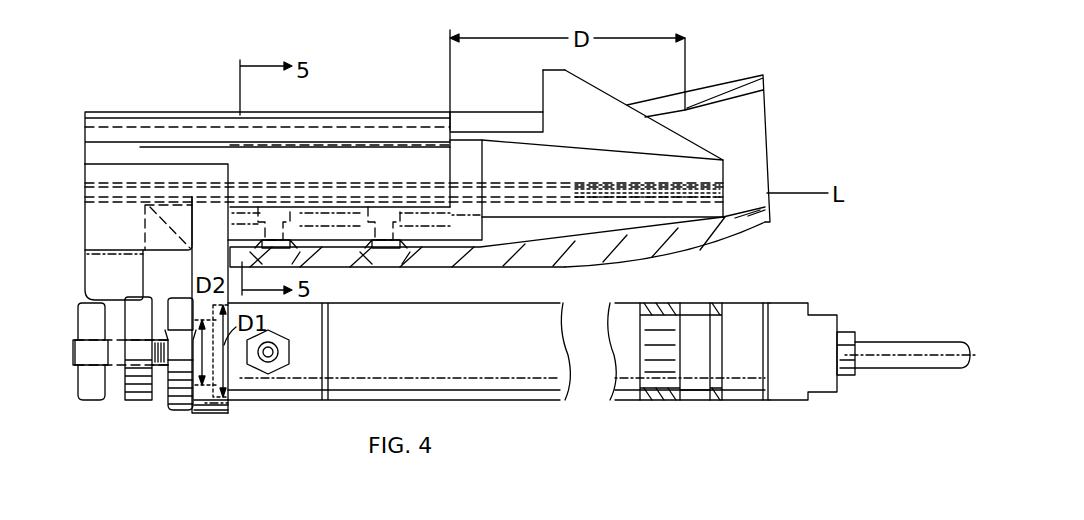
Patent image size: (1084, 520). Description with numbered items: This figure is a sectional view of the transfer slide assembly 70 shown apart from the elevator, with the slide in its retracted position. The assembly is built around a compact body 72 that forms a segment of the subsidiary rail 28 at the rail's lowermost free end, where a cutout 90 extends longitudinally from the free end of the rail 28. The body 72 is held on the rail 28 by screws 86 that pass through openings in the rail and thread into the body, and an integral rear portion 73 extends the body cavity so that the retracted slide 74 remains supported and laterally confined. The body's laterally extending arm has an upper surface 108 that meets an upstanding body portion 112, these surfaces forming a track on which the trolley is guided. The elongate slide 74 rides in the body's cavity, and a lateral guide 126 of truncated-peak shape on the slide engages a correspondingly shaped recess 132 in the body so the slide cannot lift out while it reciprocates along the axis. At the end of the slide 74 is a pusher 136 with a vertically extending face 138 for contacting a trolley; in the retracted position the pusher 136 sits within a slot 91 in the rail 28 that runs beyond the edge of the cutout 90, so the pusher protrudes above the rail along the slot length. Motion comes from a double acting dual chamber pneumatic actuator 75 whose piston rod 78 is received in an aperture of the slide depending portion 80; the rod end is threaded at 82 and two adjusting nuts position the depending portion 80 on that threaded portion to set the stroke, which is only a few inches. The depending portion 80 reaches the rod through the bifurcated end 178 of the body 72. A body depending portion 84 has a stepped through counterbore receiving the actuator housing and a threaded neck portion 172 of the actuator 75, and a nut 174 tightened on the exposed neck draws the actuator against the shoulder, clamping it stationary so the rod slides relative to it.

The subsidiary rail 28 is at (740, 82).
The transfer slide assembly 70 is at (545, 403).
The body 72 is at (480, 228).
The rear portion 73 is at (578, 216).
The slide 74 is at (705, 165).
The double acting dual chamber pneumatic actuator 75 is at (745, 318).
The piston rod 78 is at (662, 368).
The slide depending portion 80 is at (100, 280).
The threaded portion of the piston rod 82 is at (162, 368).
The body depending portion 84 is at (218, 412).
The screws 86 is at (286, 262).
The cutout 90 is at (468, 130).
The slot 91 is at (668, 102).
The upper surface of arm portion 108 is at (97, 153).
The upstanding body portion 112 is at (400, 130).
The guide 126 is at (714, 182).
The recess 132 is at (713, 195).
The pusher 136 is at (612, 90).
The face 138 is at (543, 82).
The threaded neck portion 172 is at (178, 300).
The nut 174 is at (182, 412).
The bifurcated end 178 is at (100, 222).